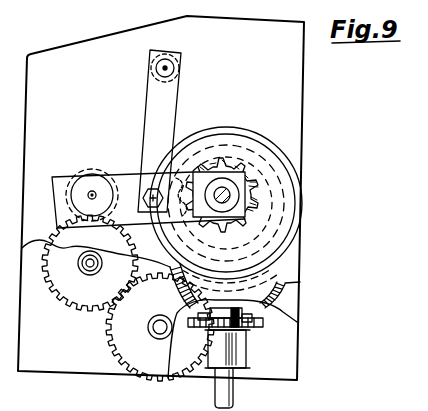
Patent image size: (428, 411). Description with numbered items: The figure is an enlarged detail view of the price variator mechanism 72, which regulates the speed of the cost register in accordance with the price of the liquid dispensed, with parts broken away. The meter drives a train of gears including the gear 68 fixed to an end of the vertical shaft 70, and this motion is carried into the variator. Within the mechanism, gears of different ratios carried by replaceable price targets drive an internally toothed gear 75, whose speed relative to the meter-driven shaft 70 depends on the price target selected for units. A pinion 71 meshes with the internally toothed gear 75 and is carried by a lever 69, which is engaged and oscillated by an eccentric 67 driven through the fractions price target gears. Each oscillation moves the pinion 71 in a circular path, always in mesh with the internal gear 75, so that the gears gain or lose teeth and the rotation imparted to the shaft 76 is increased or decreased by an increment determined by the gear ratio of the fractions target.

The eccentric 67 is at (79, 193).
The gear 68 is at (268, 323).
The lever 69 is at (127, 183).
The vertical shaft 70 is at (234, 395).
The pinion 71 is at (212, 156).
The price variator mechanism 72 is at (283, 139).
The internally toothed gear 75 is at (271, 188).
The shaft 76 is at (222, 192).